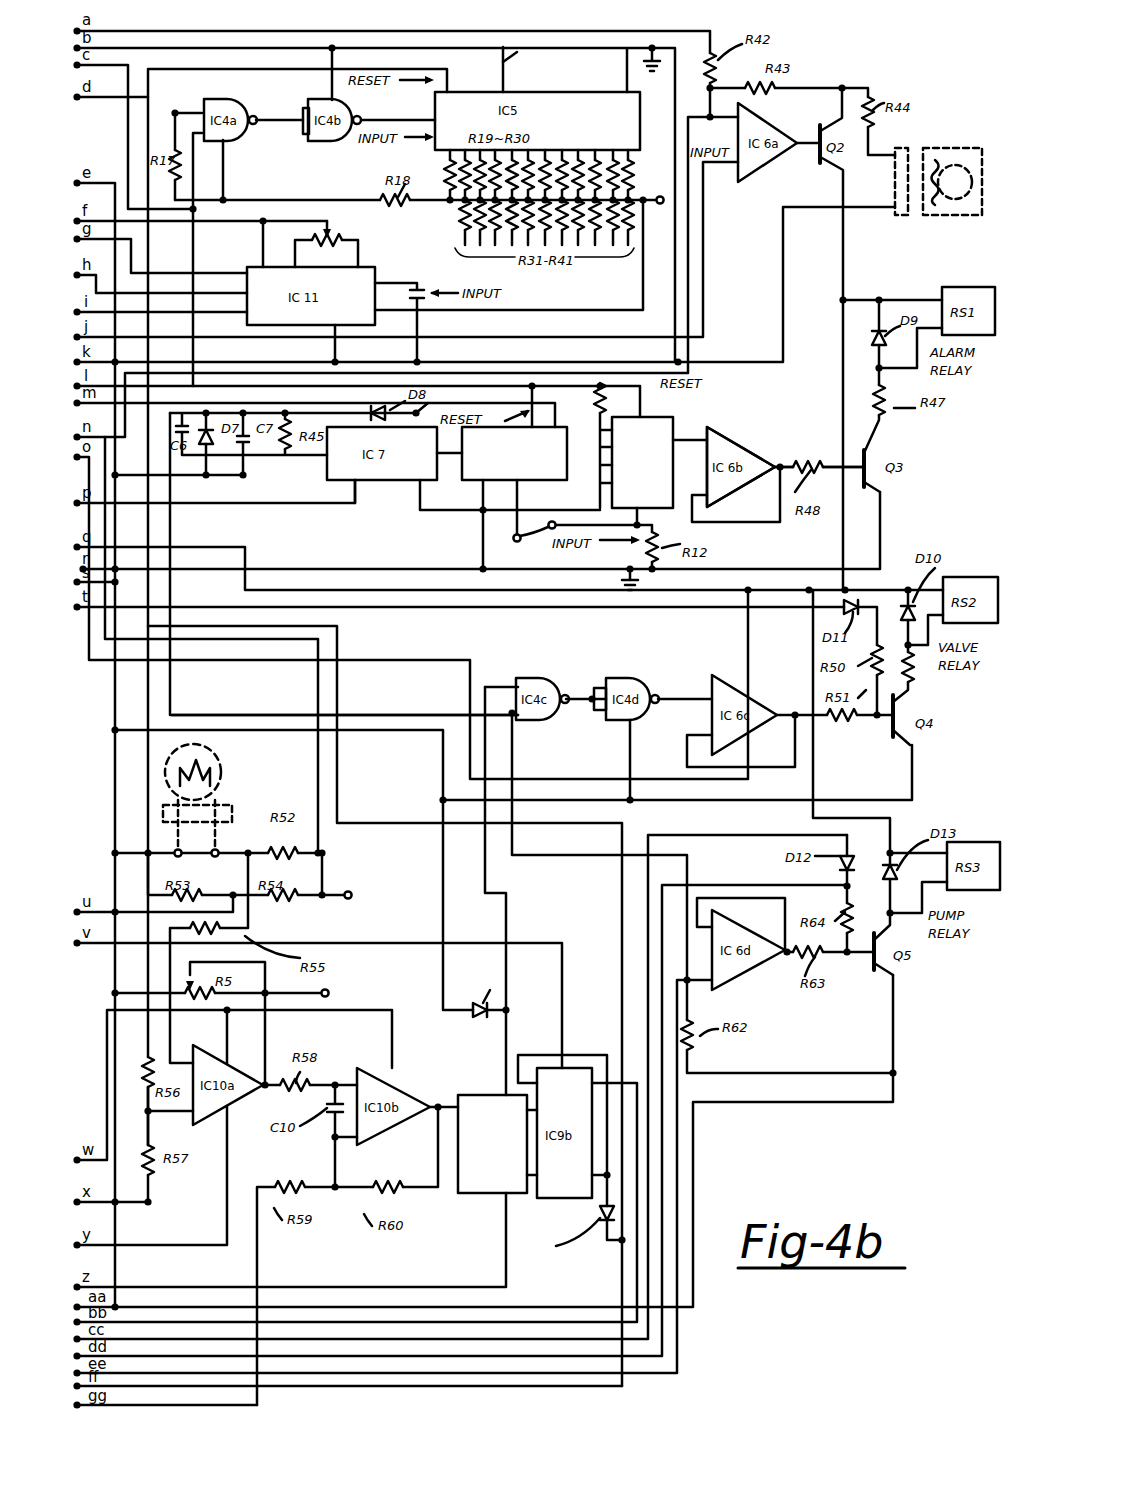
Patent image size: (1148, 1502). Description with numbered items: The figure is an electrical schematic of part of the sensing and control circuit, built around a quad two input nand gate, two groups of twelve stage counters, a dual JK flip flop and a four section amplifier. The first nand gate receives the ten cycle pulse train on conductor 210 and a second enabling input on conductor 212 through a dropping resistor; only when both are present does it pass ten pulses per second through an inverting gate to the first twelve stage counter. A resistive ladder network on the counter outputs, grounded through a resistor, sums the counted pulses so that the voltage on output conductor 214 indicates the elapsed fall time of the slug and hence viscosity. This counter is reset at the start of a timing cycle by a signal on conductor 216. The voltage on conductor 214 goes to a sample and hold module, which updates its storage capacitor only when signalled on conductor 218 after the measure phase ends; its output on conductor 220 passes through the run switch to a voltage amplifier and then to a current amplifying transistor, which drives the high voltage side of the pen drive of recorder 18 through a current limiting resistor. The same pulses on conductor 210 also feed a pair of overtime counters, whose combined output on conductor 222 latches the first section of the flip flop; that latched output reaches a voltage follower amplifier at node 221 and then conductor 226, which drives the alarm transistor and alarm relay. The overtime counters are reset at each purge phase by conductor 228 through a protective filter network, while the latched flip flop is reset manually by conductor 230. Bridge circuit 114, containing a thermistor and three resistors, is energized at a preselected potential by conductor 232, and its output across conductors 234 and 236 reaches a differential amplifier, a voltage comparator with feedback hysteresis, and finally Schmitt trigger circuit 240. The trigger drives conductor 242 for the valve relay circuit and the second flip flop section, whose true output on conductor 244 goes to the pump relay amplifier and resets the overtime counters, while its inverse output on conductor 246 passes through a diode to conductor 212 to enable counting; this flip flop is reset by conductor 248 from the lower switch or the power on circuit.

The recorder 18 is at (946, 162).
The bridge circuit 114 is at (222, 852).
The conductor 210 is at (110, 72).
The conductor 212 is at (161, 112).
The output conductor 214 is at (643, 270).
The conductor 216 is at (448, 74).
The conductor 218 is at (215, 292).
The conductor 220 is at (230, 313).
The amplifier 221 is at (699, 437).
The conductor 222 is at (517, 497).
The conductor 226 is at (778, 465).
The conductor 228 is at (170, 537).
The conductor 230 is at (642, 406).
The conductor 232 is at (318, 773).
The conductor 234 is at (255, 916).
The conductor 236 is at (152, 1046).
The Schmitt trigger circuit 240 is at (480, 1067).
The conductor 242 is at (506, 1035).
The conductor 244 is at (612, 1080).
The conductor 246 is at (600, 1192).
The conductor 248 is at (533, 943).